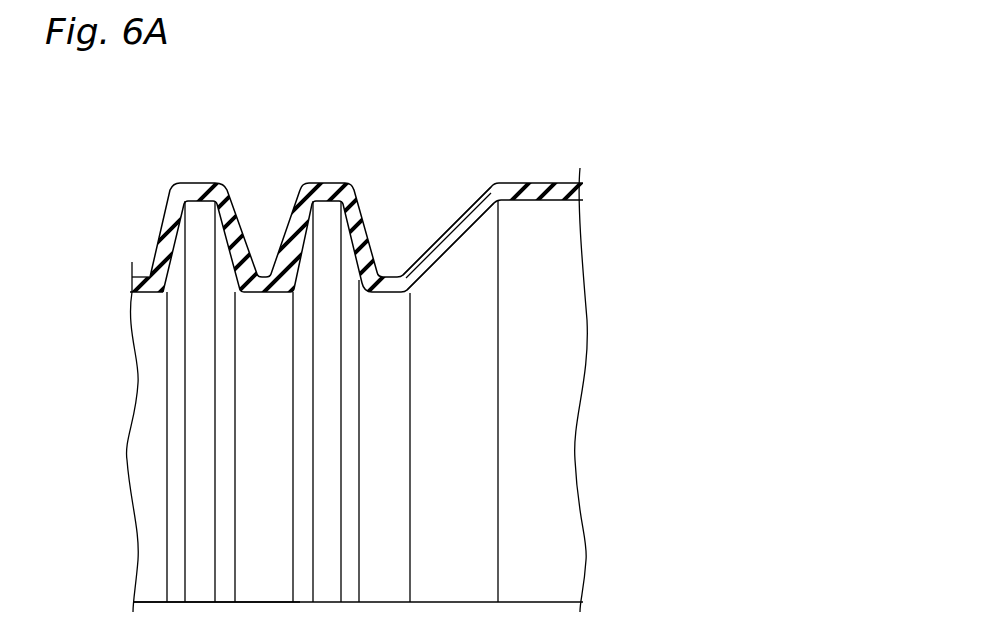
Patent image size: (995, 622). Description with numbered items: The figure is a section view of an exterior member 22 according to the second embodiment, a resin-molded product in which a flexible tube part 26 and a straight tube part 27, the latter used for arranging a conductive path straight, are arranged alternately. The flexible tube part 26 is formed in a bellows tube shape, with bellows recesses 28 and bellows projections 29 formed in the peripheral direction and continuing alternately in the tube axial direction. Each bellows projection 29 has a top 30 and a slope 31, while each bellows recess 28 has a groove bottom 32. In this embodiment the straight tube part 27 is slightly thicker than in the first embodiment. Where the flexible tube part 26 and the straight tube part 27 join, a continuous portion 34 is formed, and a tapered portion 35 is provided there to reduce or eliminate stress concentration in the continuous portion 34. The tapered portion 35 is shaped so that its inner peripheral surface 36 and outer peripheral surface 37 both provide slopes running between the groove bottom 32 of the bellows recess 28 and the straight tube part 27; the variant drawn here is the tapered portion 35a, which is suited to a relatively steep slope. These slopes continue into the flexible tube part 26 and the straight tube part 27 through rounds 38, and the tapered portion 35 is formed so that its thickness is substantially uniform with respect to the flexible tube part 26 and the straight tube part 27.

The exterior member 22 is at (504, 130).
The flexible tube part 26 is at (153, 222).
The straight tube part 27 is at (563, 186).
The bellows recess 28 is at (258, 238).
The bellows projection 29 is at (194, 183).
The top 30 is at (322, 183).
The slope 31 is at (133, 248).
The groove bottom 32 is at (386, 262).
The continuous portion 34 is at (400, 148).
The tapered portion 35 is at (449, 194).
The tapered portion (steep slope) 35a is at (441, 232).
The inner peripheral surface 36 is at (449, 244).
The outer peripheral surface 37 is at (423, 250).
The round 38 is at (492, 183).